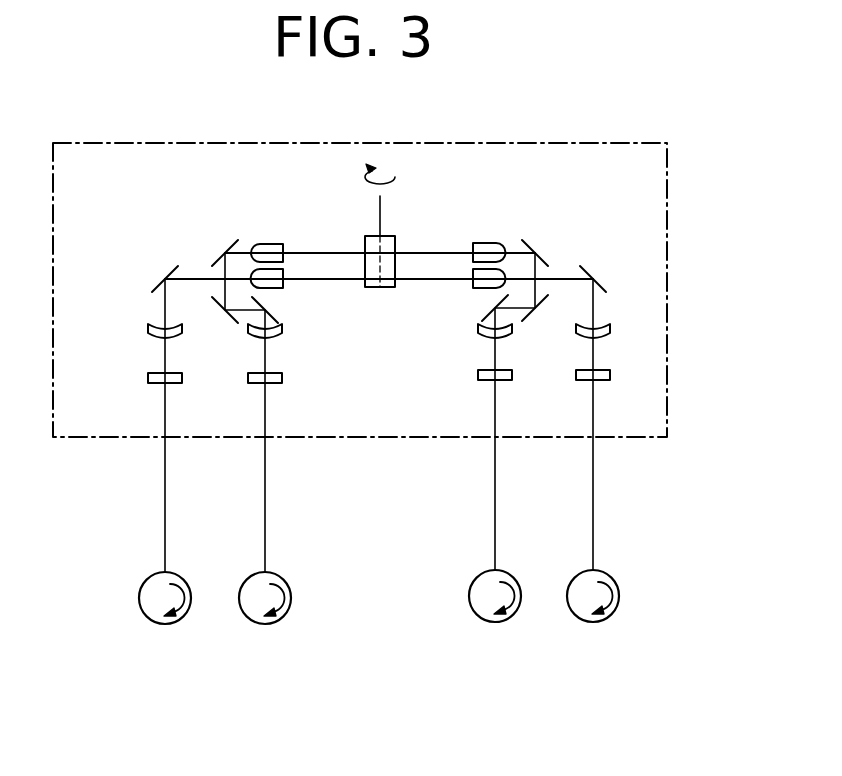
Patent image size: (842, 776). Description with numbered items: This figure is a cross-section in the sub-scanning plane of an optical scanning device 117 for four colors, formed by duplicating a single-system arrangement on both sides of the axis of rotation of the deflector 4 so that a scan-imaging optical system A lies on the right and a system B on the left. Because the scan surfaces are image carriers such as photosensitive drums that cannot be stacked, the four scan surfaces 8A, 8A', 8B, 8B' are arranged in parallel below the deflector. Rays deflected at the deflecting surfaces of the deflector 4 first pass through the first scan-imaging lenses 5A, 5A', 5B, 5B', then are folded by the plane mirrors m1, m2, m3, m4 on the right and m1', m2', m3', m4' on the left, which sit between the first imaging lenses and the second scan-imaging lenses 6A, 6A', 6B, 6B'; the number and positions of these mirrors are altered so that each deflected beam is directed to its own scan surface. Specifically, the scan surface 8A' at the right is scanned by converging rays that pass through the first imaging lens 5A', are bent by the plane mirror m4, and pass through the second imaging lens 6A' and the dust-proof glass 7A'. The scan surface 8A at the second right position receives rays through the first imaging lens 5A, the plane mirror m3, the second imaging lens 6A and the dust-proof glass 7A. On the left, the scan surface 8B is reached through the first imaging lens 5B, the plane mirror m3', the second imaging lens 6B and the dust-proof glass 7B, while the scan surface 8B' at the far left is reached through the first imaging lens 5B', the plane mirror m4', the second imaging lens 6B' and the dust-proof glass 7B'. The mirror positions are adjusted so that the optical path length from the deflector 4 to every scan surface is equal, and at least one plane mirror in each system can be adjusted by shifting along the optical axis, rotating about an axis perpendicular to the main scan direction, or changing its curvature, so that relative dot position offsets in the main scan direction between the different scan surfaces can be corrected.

The optical scanning device 117 is at (667, 253).
The deflector 4 is at (380, 288).
The first scan-imaging lens 5A is at (495, 227).
The first scan-imaging lens 5A' is at (457, 299).
The first scan-imaging lens 5B is at (276, 222).
The first scan-imaging lens 5B' is at (301, 294).
The second scan-imaging lens 6A is at (518, 351).
The second scan-imaging lens 6A' is at (614, 351).
The second scan-imaging lens 6B is at (295, 348).
The second scan-imaging lens 6B' is at (195, 347).
The dust-proof glass 7A is at (514, 398).
The dust-proof glass 7A' is at (614, 398).
The dust-proof glass 7B is at (284, 403).
The dust-proof glass 7B' is at (186, 403).
The scan surface 8A is at (467, 585).
The scan surface 8A' is at (623, 585).
The scan surface 8B is at (296, 587).
The scan surface 8B' is at (137, 587).
The plane mirror m1 is at (555, 239).
The plane mirror m1' is at (214, 230).
The plane mirror m2 is at (557, 305).
The plane mirror m2' is at (205, 306).
The plane mirror m3 is at (469, 332).
The plane mirror m3' is at (313, 321).
The plane mirror m4 is at (613, 267).
The plane mirror m4' is at (140, 265).